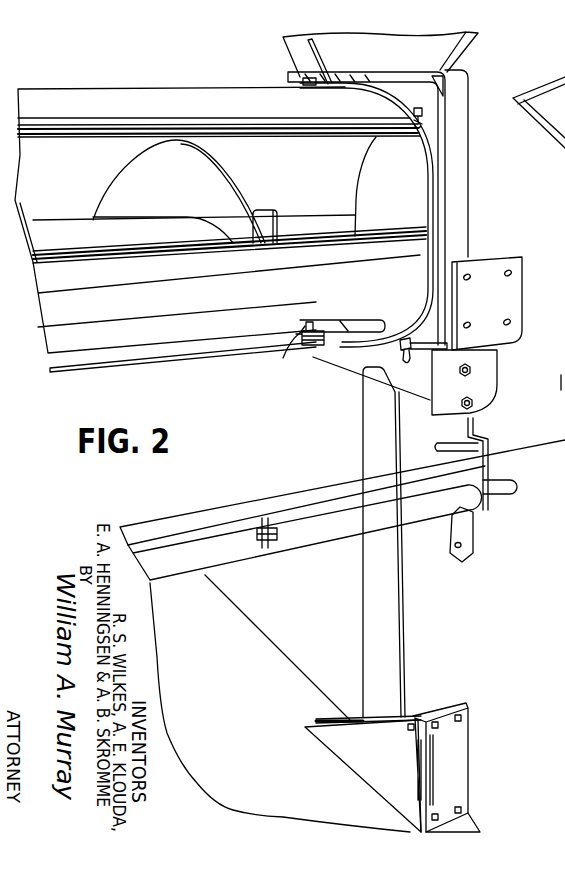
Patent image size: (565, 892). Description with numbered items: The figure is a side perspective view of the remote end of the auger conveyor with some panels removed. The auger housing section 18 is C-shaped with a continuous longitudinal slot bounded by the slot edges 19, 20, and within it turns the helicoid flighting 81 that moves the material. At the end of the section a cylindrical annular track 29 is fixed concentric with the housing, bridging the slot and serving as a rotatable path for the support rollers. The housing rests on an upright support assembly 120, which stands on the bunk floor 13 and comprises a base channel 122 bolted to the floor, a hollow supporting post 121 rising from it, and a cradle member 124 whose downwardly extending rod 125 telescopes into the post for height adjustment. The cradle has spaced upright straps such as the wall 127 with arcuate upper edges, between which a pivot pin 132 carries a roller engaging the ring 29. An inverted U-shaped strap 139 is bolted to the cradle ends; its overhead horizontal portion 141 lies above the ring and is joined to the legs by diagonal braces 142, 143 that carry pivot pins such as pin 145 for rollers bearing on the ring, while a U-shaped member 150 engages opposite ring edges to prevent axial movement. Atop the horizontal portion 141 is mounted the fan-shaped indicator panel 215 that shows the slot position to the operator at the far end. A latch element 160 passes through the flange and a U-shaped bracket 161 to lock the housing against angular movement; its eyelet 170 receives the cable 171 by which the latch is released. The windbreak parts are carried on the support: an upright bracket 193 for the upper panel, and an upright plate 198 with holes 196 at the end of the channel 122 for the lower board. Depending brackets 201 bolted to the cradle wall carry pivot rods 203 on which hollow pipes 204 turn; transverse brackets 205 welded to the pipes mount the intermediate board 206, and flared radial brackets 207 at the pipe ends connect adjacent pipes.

The auger housing section 18 is at (216, 104).
The slot edge 19 is at (288, 120).
The slot edge 20 is at (310, 233).
The helicoid flighting 81 is at (218, 179).
The overhead horizontal portion 141 is at (368, 74).
The diagonal brace 142 is at (302, 80).
The indicator panel 215 is at (440, 42).
The diagonal brace 143 is at (426, 97).
The pivot pin 145 is at (423, 113).
The U-shaped strap 139 is at (460, 133).
The annular track 29 is at (436, 190).
The eyelet 170 is at (303, 325).
The latch element 160 is at (331, 350).
The U-shaped bracket 161 is at (393, 318).
The upright strap 127 is at (363, 361).
The pivot pin 132 is at (412, 338).
The upright bracket 193 is at (518, 295).
The U-shaped member 150 is at (551, 369).
The cradle member 124 is at (411, 392).
The depending bracket 201 is at (470, 424).
The rod 125 is at (386, 460).
The intermediate board 206 is at (305, 497).
The hollow pipe 204 is at (420, 507).
The pivot rod 203 is at (500, 494).
The radial bracket 207 is at (470, 536).
The transverse bracket 205 is at (245, 530).
The supporting post 121 is at (388, 578).
The upright support assembly 120 is at (412, 614).
The base channel 122 is at (331, 705).
The bunk floor 13 is at (232, 683).
The upright plate 198 is at (456, 757).
The holes 196 is at (456, 715).
The cable 171 is at (180, 357).